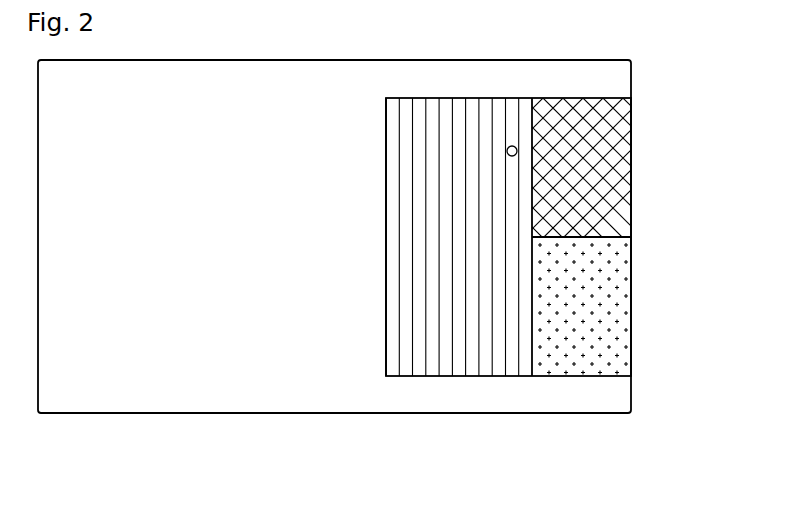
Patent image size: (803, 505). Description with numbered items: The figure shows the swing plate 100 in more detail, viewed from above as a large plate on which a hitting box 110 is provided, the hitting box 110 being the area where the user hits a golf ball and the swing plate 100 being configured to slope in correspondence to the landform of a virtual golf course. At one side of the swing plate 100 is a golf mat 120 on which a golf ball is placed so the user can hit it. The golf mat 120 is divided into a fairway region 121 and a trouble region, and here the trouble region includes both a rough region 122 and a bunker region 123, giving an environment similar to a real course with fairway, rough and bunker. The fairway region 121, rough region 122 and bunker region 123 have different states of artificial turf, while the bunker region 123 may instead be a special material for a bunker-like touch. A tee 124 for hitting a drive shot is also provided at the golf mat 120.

The swing plate 100 is at (290, 420).
The hitting box 110 is at (238, 233).
The golf mat 120 is at (640, 203).
The fairway region 121 is at (418, 324).
The rough region 122 is at (627, 133).
The bunker region 123 is at (630, 341).
The tee 124 is at (511, 146).